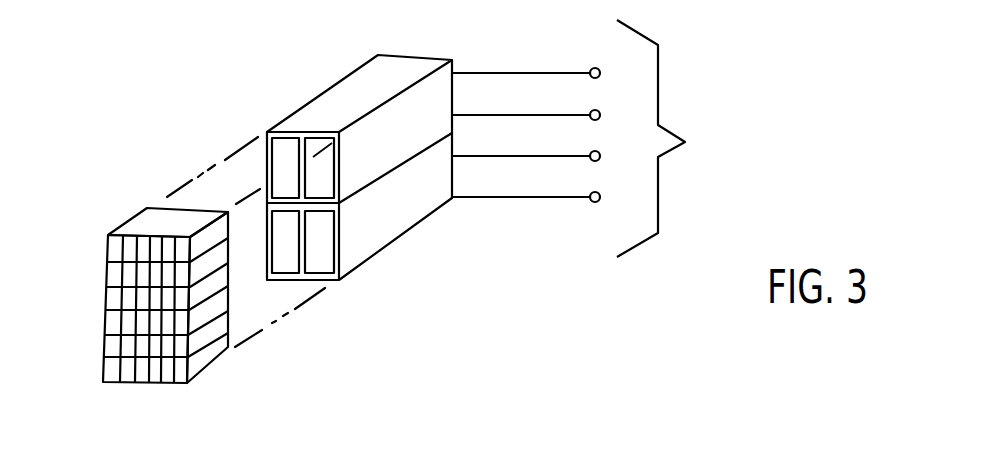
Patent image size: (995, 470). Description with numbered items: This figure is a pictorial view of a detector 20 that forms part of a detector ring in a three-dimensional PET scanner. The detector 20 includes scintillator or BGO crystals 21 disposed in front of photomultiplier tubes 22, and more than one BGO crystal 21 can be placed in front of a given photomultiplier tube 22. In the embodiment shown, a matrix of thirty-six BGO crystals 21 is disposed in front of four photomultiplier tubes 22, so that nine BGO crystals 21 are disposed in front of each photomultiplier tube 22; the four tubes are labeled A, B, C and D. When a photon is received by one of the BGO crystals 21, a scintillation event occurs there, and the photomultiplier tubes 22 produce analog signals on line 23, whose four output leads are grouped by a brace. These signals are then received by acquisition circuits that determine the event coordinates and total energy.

The detector 20 is at (277, 97).
The BGO crystal 21 is at (100, 254).
The photomultiplier tube 22 is at (397, 146).
The line 23 is at (589, 138).